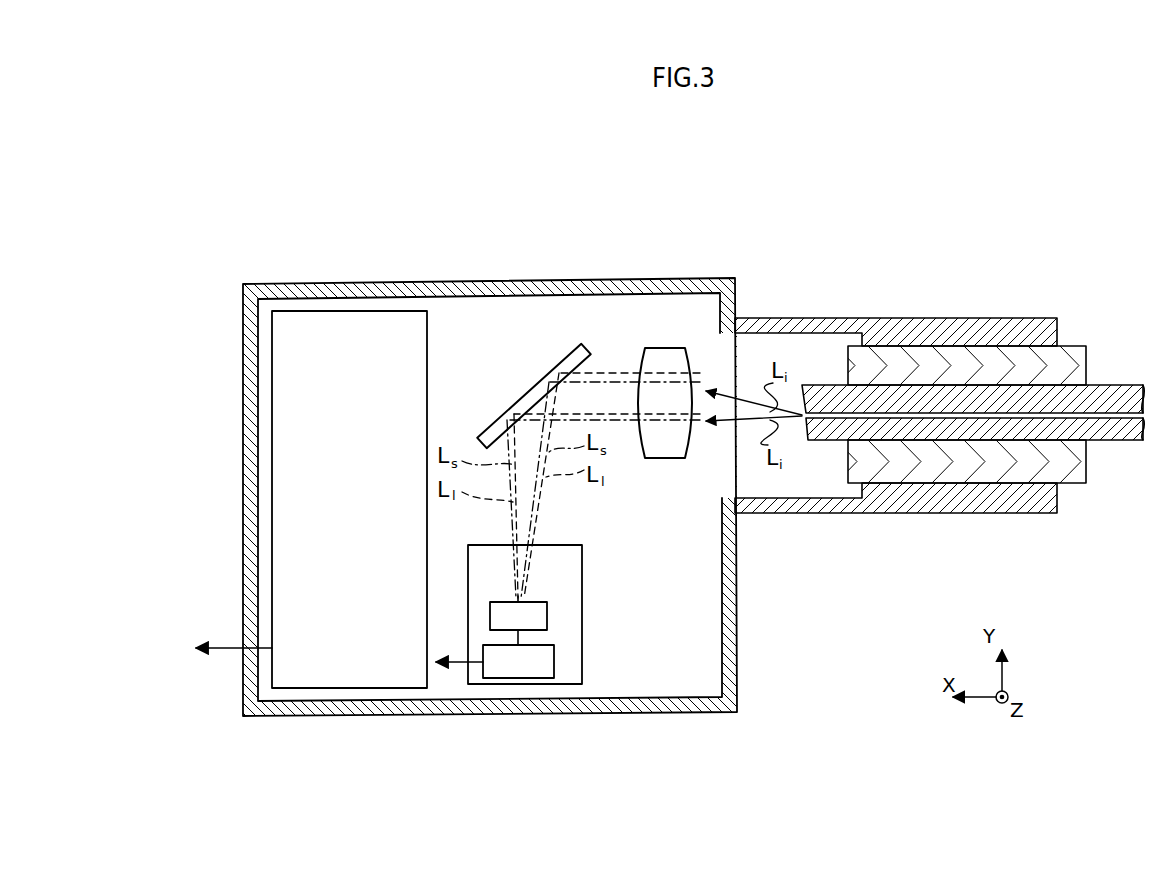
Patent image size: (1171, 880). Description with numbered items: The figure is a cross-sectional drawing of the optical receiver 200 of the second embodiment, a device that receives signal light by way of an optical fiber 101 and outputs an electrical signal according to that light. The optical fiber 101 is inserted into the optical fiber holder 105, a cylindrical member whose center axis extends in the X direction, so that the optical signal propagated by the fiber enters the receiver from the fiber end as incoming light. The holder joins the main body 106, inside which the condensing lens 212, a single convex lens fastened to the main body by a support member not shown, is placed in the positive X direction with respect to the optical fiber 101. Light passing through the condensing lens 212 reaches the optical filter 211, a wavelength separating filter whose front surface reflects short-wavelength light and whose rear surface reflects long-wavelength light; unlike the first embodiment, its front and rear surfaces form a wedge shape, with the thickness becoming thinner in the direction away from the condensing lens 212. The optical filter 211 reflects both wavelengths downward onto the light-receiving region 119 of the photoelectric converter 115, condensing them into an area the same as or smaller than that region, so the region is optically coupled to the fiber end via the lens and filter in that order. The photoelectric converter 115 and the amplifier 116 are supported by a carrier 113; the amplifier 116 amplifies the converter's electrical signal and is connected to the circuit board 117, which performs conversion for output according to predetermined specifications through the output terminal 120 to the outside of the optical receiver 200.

The optical receiver 200 is at (1064, 214).
The main body 106 is at (268, 284).
The optical fiber holder 105 is at (993, 318).
The optical fiber 101 is at (1118, 385).
The condensing lens 212 is at (658, 348).
The optical filter 211 is at (560, 347).
The carrier 113 is at (582, 668).
The photoelectric converter 115 is at (547, 616).
The amplifier 116 is at (518, 684).
The circuit board 117 is at (350, 688).
The light-receiving region 119 is at (520, 599).
The output terminal 120 is at (218, 655).